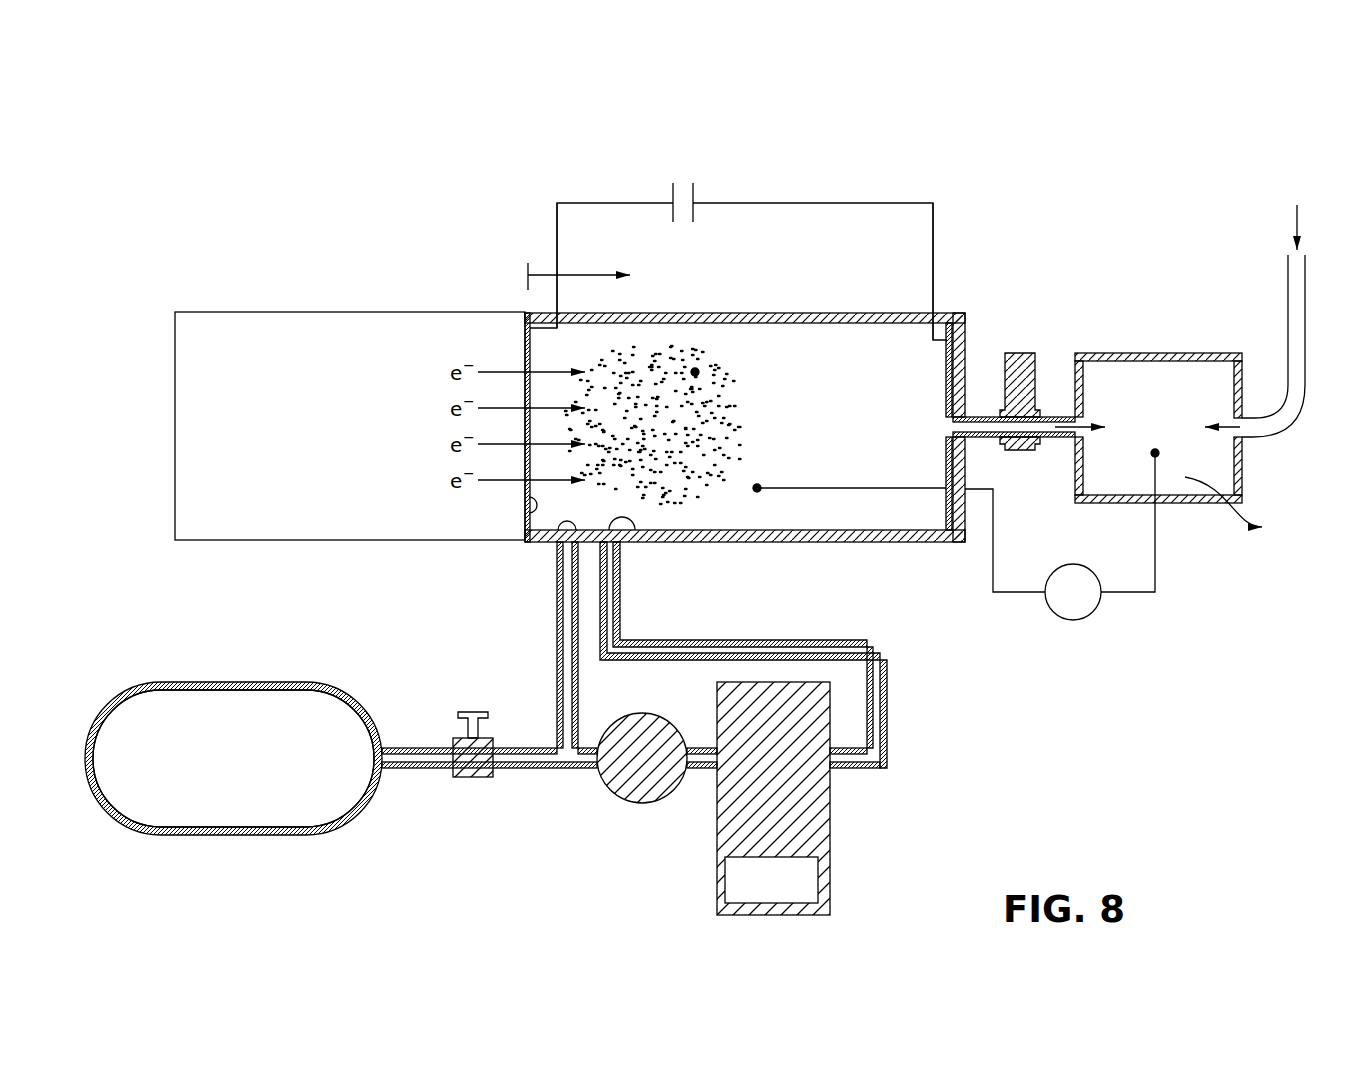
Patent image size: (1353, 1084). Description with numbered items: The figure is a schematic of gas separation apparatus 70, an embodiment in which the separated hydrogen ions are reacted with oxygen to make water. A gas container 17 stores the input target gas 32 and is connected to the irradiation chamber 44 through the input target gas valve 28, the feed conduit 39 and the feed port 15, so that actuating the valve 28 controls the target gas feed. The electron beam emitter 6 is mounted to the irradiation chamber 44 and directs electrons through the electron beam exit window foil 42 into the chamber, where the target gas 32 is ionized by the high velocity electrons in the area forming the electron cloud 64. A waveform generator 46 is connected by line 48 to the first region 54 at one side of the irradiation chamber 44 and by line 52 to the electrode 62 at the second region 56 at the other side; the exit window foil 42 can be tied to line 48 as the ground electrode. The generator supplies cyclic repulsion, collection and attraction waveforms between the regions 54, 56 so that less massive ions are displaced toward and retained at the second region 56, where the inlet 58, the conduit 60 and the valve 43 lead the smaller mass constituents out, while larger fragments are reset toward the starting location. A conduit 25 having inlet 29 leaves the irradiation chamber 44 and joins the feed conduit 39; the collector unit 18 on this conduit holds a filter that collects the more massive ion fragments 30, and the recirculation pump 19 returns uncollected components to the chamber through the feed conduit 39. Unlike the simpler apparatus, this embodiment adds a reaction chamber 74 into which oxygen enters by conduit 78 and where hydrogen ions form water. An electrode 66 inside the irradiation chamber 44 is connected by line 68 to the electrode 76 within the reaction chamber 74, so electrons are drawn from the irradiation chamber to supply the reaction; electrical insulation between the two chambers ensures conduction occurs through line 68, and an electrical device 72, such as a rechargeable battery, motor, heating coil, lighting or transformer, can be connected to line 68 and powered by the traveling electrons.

The electron beam emitter 6 is at (273, 332).
The feed port 15 is at (556, 524).
The gas container 17 is at (225, 836).
The collector unit 18 is at (817, 815).
The recirculation pump 19 is at (640, 803).
The conduit 25 is at (888, 665).
The input target gas valve 28 is at (478, 712).
The inlet 29 is at (624, 519).
The more massive ion fragments 30 is at (800, 873).
The target gas 32 is at (173, 707).
The feed conduit 39 is at (557, 628).
The electron beam exit window foil 42 is at (527, 508).
The valve 43 is at (1017, 353).
The irradiation chamber 44 is at (763, 543).
The waveform generator 46 is at (710, 130).
The line 48 is at (555, 236).
The line 52 is at (855, 203).
The first region 54 is at (557, 348).
The second region 56 is at (932, 352).
The inlet 58 is at (948, 426).
The conduit 60 is at (982, 440).
The electrode 62 is at (946, 376).
The electron cloud 64 is at (695, 368).
The electrode 66 is at (825, 488).
The line 68 is at (993, 528).
The gas separation apparatus 70 is at (1070, 158).
The electrical device 72 is at (1090, 613).
The reaction chamber 74 is at (1153, 353).
The electrode 76 is at (1153, 470).
The conduit 78 is at (1287, 328).